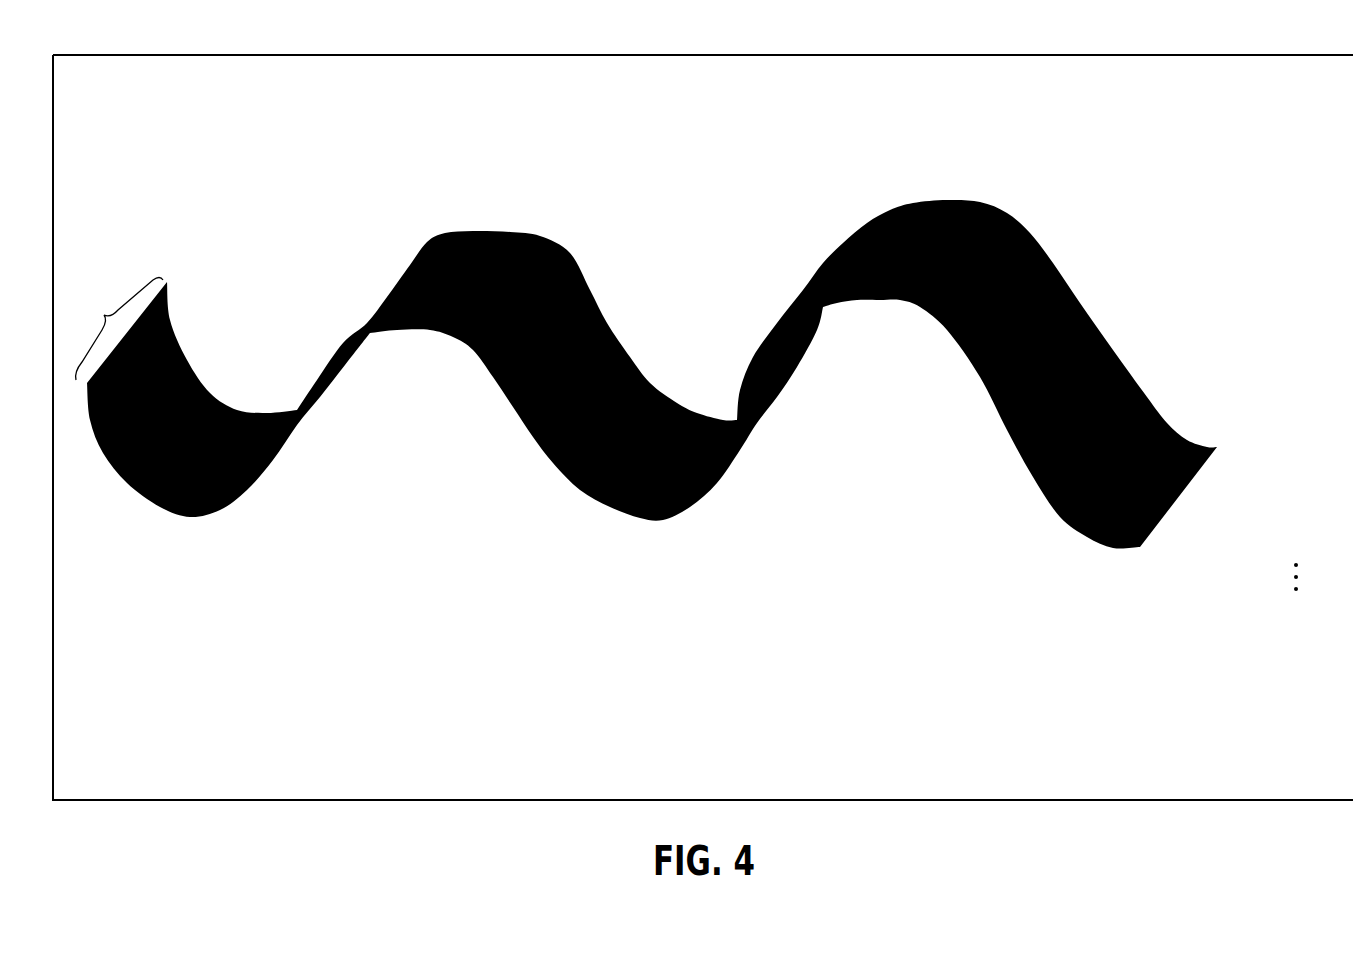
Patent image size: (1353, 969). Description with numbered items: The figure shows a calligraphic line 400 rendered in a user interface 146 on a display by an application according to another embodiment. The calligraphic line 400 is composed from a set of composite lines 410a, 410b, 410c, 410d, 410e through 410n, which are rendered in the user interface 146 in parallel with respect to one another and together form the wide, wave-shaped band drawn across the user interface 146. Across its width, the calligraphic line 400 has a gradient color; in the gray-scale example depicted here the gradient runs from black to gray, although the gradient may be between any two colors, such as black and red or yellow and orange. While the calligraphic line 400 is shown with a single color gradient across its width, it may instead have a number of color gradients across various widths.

The user interface 146 is at (168, 55).
The calligraphic line 400 is at (500, 232).
The composite line 410a is at (1215, 448).
The composite line 410b is at (1213, 458).
The composite line 410c is at (1209, 468).
The composite line 410d is at (1204, 477).
The composite line 410e is at (1196, 486).
The composite line 410n is at (1140, 547).